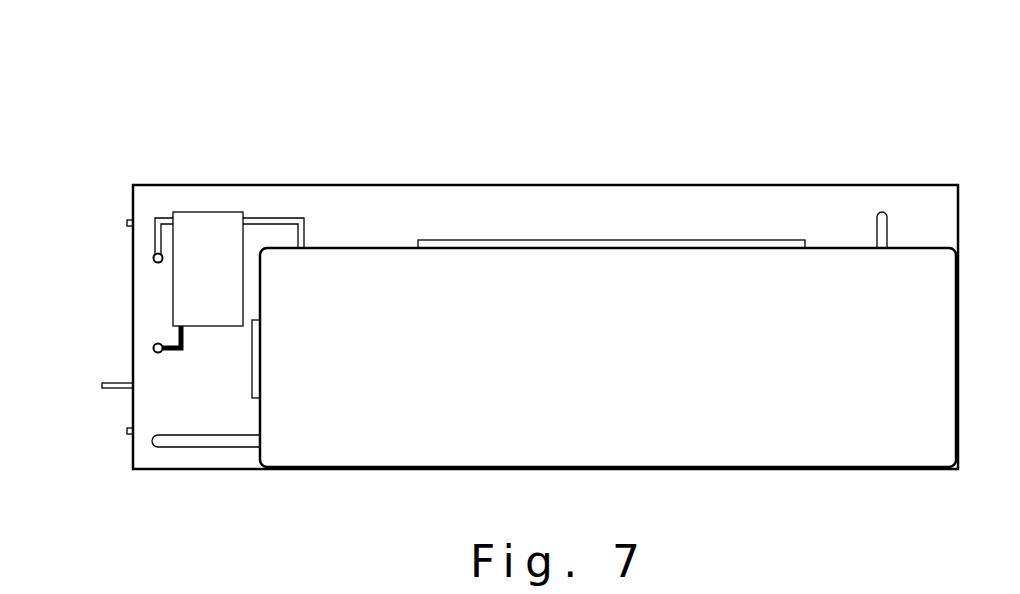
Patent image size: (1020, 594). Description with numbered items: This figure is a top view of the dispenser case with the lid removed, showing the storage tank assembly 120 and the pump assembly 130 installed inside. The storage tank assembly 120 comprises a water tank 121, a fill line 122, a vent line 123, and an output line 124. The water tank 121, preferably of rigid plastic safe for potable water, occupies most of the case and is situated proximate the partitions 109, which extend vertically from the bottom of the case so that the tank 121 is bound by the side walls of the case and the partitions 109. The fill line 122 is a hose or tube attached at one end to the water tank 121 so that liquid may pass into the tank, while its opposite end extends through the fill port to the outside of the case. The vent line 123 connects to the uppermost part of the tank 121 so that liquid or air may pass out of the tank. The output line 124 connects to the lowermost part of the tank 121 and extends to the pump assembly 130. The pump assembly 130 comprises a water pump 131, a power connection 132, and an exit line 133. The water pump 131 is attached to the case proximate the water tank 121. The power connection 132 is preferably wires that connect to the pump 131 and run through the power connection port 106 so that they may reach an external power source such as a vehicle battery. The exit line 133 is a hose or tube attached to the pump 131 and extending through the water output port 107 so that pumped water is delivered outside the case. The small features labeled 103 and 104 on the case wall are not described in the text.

The fastener 103 is at (127, 222).
The mounting bracket 104 is at (115, 390).
The power connection port 106 is at (153, 347).
The water output port 107 is at (154, 254).
The partitions 109 is at (542, 243).
The storage tank assembly 120 is at (883, 465).
The water tank 121 is at (752, 425).
The fill line 122 is at (213, 440).
The vent line 123 is at (880, 235).
The output line 124 is at (302, 218).
The pump assembly 130 is at (217, 192).
The water pump 131 is at (207, 228).
The power connection 132 is at (179, 339).
The exit line 133 is at (167, 219).